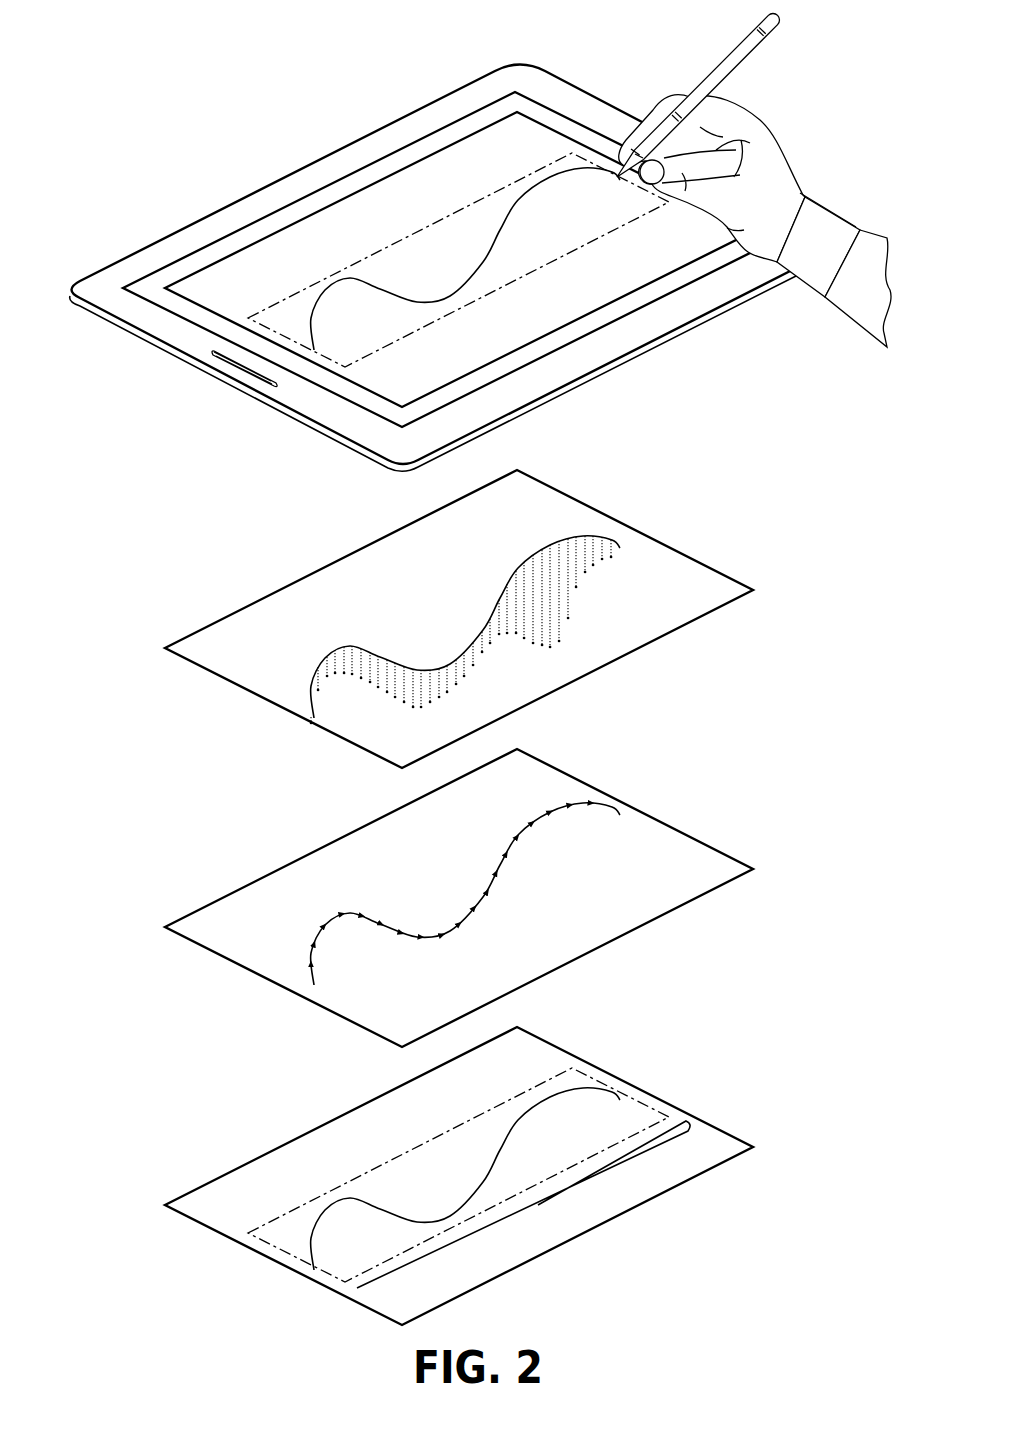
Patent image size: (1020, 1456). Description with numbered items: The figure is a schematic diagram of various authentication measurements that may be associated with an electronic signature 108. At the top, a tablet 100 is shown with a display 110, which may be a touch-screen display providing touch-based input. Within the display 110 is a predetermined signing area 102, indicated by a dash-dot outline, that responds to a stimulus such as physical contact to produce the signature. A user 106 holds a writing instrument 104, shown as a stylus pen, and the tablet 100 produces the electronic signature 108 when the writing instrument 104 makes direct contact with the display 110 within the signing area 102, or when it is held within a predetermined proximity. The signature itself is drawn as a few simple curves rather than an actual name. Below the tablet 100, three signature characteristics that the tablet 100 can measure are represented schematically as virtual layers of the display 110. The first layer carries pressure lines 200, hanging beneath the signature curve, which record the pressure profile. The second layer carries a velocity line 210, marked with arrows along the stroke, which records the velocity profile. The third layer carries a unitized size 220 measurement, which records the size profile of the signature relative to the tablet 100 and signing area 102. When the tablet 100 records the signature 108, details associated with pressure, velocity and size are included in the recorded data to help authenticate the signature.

The tablet 100 is at (422, 110).
The signing area 102 is at (503, 197).
The writing instrument 104 is at (728, 65).
The user 106 is at (779, 171).
The electronic signature 108 is at (374, 281).
The display 110 is at (280, 244).
The pressure lines 200 is at (568, 610).
The velocity line 210 is at (447, 904).
The unitized size measurement 220 is at (640, 1265).